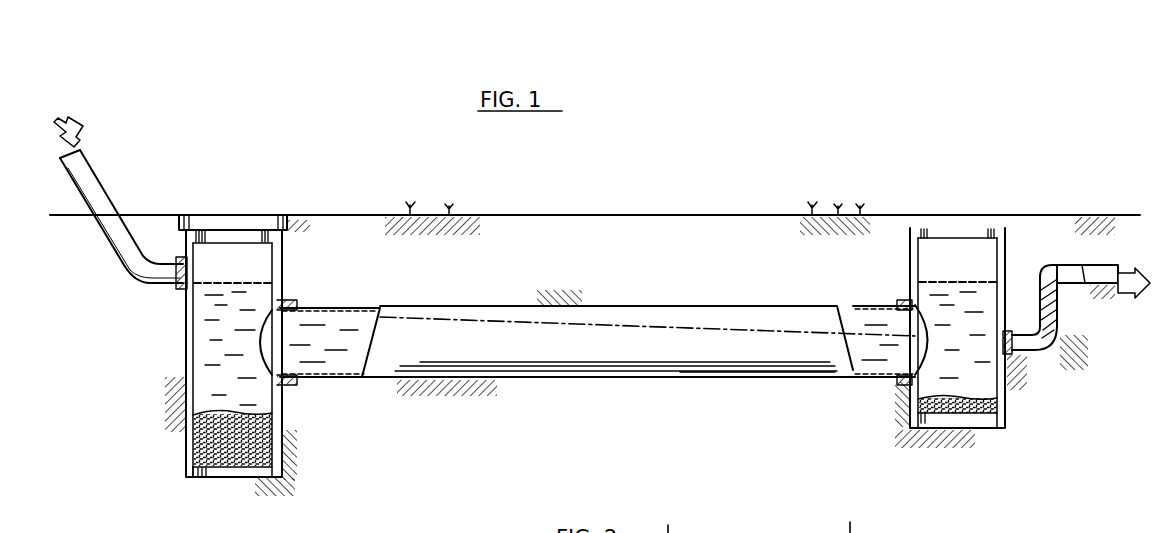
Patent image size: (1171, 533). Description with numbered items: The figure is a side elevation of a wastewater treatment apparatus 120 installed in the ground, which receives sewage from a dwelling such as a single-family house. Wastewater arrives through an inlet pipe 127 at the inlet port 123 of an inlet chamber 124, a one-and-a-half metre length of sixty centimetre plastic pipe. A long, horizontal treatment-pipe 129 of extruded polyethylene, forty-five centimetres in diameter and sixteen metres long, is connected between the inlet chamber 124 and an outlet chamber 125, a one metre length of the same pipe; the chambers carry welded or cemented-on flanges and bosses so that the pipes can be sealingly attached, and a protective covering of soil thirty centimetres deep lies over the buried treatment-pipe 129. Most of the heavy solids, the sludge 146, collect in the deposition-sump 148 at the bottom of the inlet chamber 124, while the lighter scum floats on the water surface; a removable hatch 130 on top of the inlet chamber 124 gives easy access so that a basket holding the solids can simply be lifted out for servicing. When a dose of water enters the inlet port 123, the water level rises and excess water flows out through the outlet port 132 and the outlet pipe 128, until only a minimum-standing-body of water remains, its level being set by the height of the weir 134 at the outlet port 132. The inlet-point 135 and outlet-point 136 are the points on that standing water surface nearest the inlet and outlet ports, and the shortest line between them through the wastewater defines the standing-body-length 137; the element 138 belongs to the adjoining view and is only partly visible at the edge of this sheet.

In FIG. 1, the wastewater treatment apparatus 120 is at (532, 417).
In FIG. 1, the inlet port 123 is at (183, 288).
In FIG. 1, the inlet chamber 124 is at (283, 409).
In FIG. 1, the outlet chamber 125 is at (1004, 403).
In FIG. 1, the inlet pipe 127 is at (137, 293).
In FIG. 1, the outlet pipe 128 is at (1052, 350).
In FIG. 1, the treatment-pipe 129 is at (712, 380).
In FIG. 1, the removable hatch 130 is at (263, 227).
In FIG. 1, the outlet port 132 is at (1008, 388).
In FIG. 1, the weir 134 is at (1067, 287).
In FIG. 1, the inlet-point 135 is at (202, 247).
In FIG. 1, the outlet-point 136 is at (1052, 265).
In FIG. 1, the standing-body-length 137 is at (647, 328).
In FIG. 2, the element of FIG. 2 138 is at (760, 532).
In FIG. 1, the sludge 146 is at (231, 455).
In FIG. 1, the deposition-sump 148 is at (190, 449).